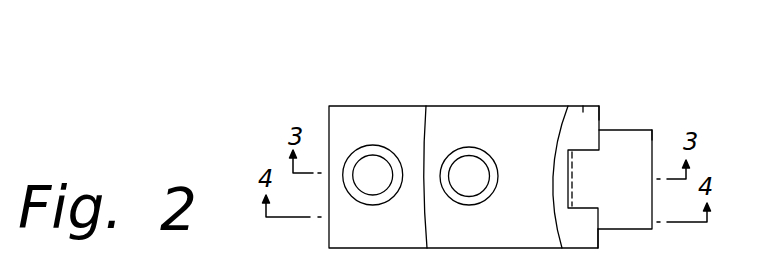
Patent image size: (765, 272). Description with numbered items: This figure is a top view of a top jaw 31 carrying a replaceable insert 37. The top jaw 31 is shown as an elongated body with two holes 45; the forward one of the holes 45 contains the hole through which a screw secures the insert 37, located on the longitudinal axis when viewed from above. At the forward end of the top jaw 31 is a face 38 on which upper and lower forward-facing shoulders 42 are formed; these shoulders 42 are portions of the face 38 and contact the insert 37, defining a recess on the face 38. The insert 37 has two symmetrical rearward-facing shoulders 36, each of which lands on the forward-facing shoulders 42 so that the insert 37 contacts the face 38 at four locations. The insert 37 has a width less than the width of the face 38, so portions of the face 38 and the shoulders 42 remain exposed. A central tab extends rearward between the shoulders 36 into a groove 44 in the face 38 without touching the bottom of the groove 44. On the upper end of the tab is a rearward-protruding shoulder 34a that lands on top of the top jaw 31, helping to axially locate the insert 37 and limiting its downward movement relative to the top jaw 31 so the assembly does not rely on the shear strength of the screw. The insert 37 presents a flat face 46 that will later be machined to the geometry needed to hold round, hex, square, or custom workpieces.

The top jaw 31 is at (495, 69).
The holes 45 is at (366, 163).
The rearward-protruding shoulder 34a is at (567, 158).
The rearward-facing shoulders 36 is at (598, 137).
The face 38 is at (607, 118).
The replaceable insert 37 is at (635, 135).
The flat face 46 is at (652, 131).
The groove 44 is at (570, 187).
The forward-facing shoulders 42 is at (600, 241).